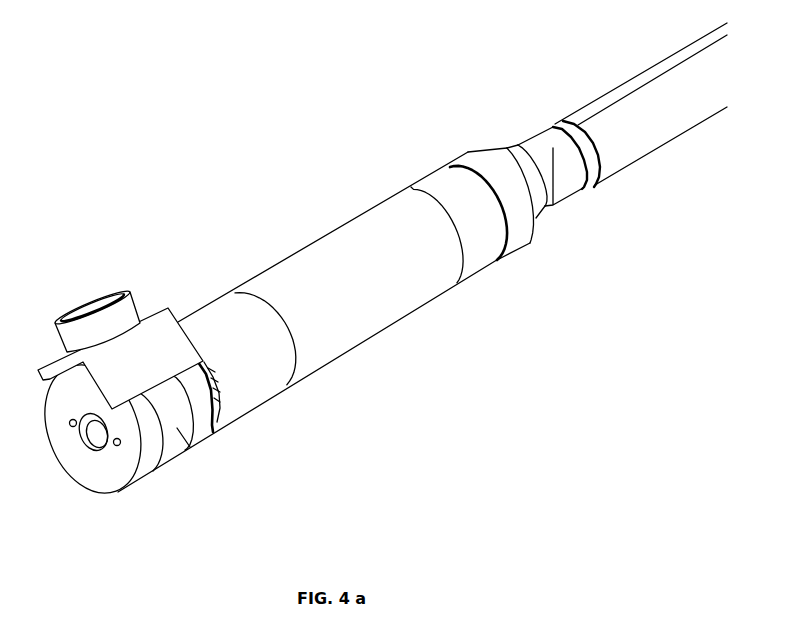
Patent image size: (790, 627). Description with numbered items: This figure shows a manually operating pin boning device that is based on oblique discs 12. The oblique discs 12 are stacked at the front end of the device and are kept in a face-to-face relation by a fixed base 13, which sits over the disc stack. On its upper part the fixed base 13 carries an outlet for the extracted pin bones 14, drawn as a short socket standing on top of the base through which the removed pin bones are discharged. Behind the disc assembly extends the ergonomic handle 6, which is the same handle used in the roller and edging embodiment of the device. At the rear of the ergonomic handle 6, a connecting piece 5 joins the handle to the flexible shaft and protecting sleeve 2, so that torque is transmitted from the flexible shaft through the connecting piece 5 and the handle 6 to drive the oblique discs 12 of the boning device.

The protecting sleeve 2 is at (610, 131).
The connecting piece 5 is at (478, 162).
The ergonomic handle 6 is at (317, 275).
The oblique discs 12 is at (208, 429).
The fixed base 13 is at (170, 338).
The outlet for the extracted pin bones 14 is at (92, 297).